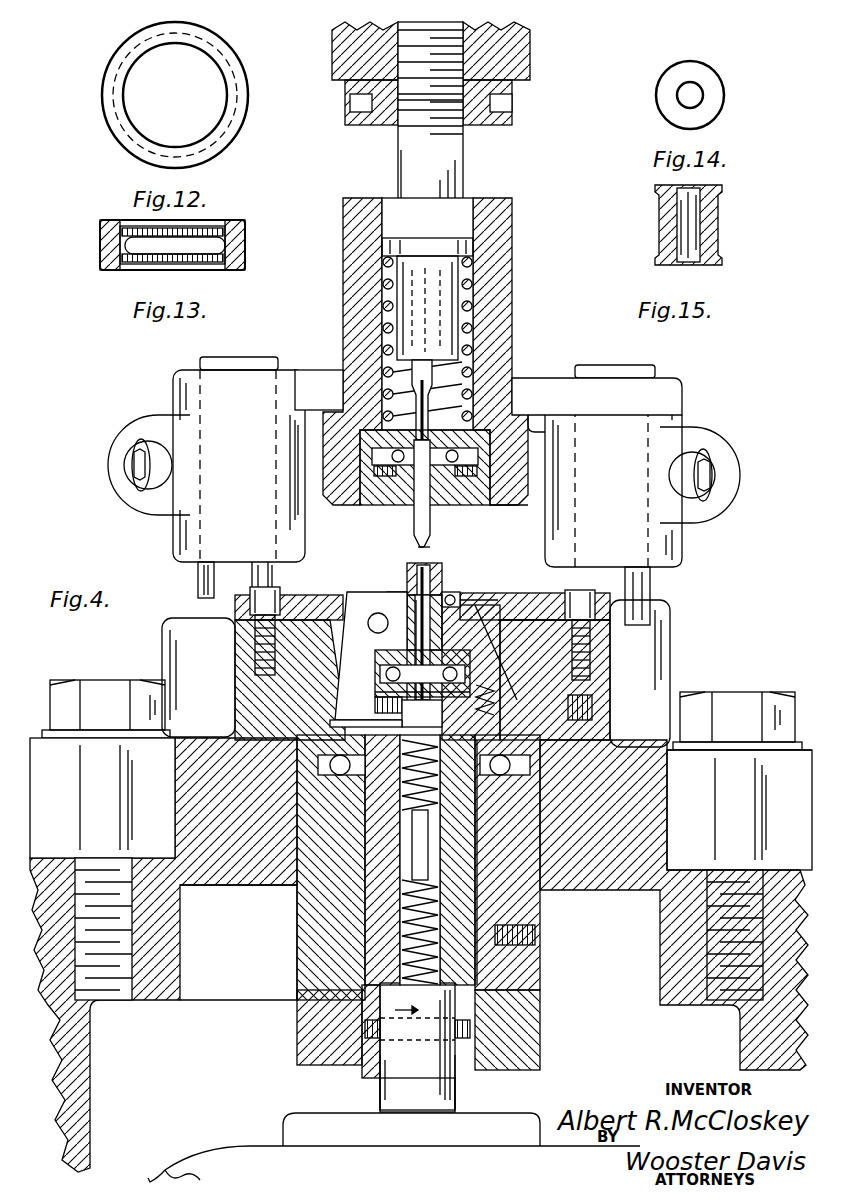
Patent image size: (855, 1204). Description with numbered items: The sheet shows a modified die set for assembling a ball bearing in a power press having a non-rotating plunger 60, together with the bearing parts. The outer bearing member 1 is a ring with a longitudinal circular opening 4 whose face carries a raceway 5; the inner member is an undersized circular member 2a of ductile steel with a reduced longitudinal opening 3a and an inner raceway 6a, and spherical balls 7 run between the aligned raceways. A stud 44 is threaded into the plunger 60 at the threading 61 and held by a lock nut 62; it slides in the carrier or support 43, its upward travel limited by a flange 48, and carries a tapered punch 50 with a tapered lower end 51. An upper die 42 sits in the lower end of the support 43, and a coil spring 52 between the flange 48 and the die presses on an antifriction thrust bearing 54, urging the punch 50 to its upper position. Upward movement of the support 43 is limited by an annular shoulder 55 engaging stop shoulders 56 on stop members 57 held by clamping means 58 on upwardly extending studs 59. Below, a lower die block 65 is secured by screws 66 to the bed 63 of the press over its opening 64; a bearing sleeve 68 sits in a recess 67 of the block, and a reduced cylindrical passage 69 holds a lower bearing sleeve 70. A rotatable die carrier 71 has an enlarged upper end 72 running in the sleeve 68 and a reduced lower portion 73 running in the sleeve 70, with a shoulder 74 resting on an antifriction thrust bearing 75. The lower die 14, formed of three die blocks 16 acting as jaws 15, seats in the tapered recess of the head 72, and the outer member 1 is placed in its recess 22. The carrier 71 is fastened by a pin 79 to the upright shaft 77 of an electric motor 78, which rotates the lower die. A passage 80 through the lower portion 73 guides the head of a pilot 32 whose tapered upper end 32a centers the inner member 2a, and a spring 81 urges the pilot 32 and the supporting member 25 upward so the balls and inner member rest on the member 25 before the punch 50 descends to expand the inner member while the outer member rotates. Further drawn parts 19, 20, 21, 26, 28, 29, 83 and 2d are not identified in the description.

In FIG. 12, the outer bearing member 1 is at (236, 128).
In FIG. 13, the outer bearing member 1 is at (245, 230).
In FIG. 12, the longitudinal circular opening 4 is at (146, 140).
In FIG. 13, the longitudinal circular opening 4 is at (218, 224).
In FIG. 12, the raceway 5 is at (122, 110).
In FIG. 13, the raceway 5 is at (232, 250).
In FIG. 14, the undersized circular member 2a is at (718, 99).
In FIG. 4, the undersized circular member 2a is at (430, 560).
In FIG. 14, the longitudinal opening of reduced size 3a is at (694, 94).
In FIG. 15, the longitudinal opening of reduced size 3a is at (688, 262).
In FIG. 4, the longitudinal opening of reduced size 3a is at (410, 575).
In FIG. 15, the inner raceway 6a is at (655, 205).
In FIG. 4, the inner raceway 6a is at (407, 583).
In FIG. 15, the bushing bore 2d is at (712, 250).
In FIG. 4, the non-rotating plunger 60 is at (345, 63).
In FIG. 4, the threading 61 is at (463, 68).
In FIG. 4, the lock nut 62 is at (480, 125).
In FIG. 4, the stud 44 is at (463, 176).
In FIG. 4, the flange 48 is at (474, 252).
In FIG. 4, the carrier or support 43 is at (505, 303).
In FIG. 4, the coil spring 52 is at (470, 345).
In FIG. 4, the punch 50 is at (430, 393).
In FIG. 4, the tapered lower end 51 is at (414, 525).
In FIG. 4, the antifriction thrust bearing 54 is at (490, 457).
In FIG. 4, the annular shoulder 55 is at (520, 412).
In FIG. 4, the stop shoulders 56 is at (540, 430).
In FIG. 4, the stop members 57 is at (683, 405).
In FIG. 4, the clamping means 58 is at (715, 472).
In FIG. 4, the upwardly extending studs 59 is at (650, 592).
In FIG. 4, the upper die 42 is at (485, 506).
In FIG. 4, the tapered upper end of pilot 32a is at (428, 545).
In FIG. 4, the lower die 14 is at (330, 585).
In FIG. 4, the spherical balls 7 is at (352, 592).
In FIG. 4, the recess 22 is at (470, 578).
In FIG. 4, the die blocks or jaws 16 is at (480, 620).
In FIG. 4, the jaws 15 is at (505, 620).
In FIG. 4, the enlarged upper end 72 is at (536, 585).
In FIG. 4, the flange plate 19 is at (556, 595).
In FIG. 4, the flange bolt 20 is at (590, 596).
In FIG. 4, the supporting member 25 is at (378, 608).
In FIG. 4, the pilot 32 is at (415, 644).
In FIG. 4, the bearing housing 26 is at (378, 660).
In FIG. 4, the ball bearing 29 is at (380, 678).
In FIG. 4, the bearing retainer 28 is at (378, 693).
In FIG. 4, the piston chamber 83 is at (400, 905).
In FIG. 4, the die carrier or support 71 is at (585, 655).
In FIG. 4, the lower die block 65 is at (690, 680).
In FIG. 4, the bearing bushing or sleeve 68 is at (590, 735).
In FIG. 4, the recess 67 is at (560, 783).
In FIG. 4, the small spring 21 is at (488, 735).
In FIG. 4, the shoulder 74 is at (478, 785).
In FIG. 4, the spring 81 is at (420, 812).
In FIG. 4, the antifriction thrust bearing 75 is at (500, 810).
In FIG. 4, the passage 80 is at (412, 860).
In FIG. 4, the reduced lower portion 73 is at (445, 869).
In FIG. 4, the screws 66 is at (760, 812).
In FIG. 4, the reduced cylindrical passage 69 is at (520, 920).
In FIG. 4, the bearing sleeve 70 is at (490, 975).
In FIG. 4, the bed 63 is at (158, 998).
In FIG. 4, the opening 64 is at (225, 1000).
In FIG. 4, the pin 79 is at (417, 1078).
In FIG. 4, the upright shaft 77 is at (455, 1100).
In FIG. 4, the electric motor 78 is at (245, 1142).